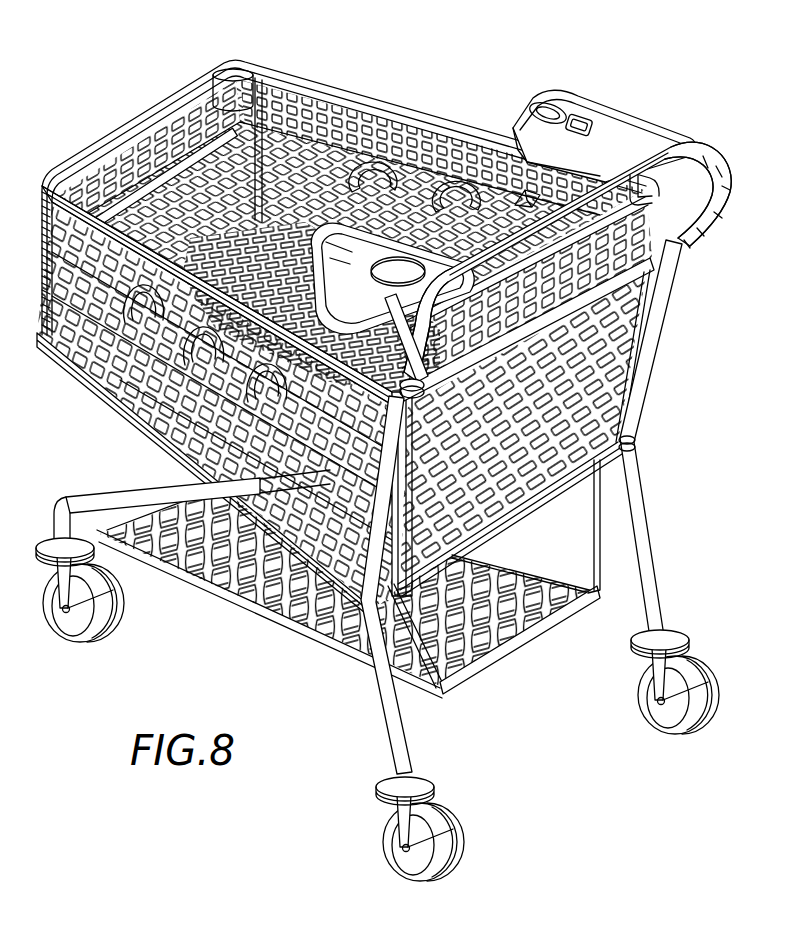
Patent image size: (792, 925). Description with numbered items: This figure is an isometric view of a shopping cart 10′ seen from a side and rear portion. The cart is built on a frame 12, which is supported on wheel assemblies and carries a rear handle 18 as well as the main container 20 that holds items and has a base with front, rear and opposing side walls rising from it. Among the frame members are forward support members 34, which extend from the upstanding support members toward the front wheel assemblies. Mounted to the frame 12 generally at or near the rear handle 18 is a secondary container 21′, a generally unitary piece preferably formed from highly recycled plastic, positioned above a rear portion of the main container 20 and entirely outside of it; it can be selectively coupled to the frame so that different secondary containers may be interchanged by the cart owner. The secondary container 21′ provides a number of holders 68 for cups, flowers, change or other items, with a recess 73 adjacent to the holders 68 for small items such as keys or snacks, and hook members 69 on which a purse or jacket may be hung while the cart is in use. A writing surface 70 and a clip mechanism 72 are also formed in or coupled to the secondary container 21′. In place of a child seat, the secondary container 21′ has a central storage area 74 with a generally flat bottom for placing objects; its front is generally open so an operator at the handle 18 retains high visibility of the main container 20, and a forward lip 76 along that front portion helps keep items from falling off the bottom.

The shopping cart 10′ is at (438, 38).
The frame 12 is at (632, 440).
The rear handle 18 is at (665, 255).
The main container 20 is at (428, 117).
The secondary container 21′ is at (645, 105).
The forward support member 34 is at (113, 505).
The holder 68 is at (399, 262).
The hook member 69 is at (705, 170).
The writing surface 70 is at (650, 138).
The clip mechanism 72 is at (585, 122).
The recess 73 is at (340, 228).
The central storage area 74 is at (522, 200).
The forward lip 76 is at (480, 203).